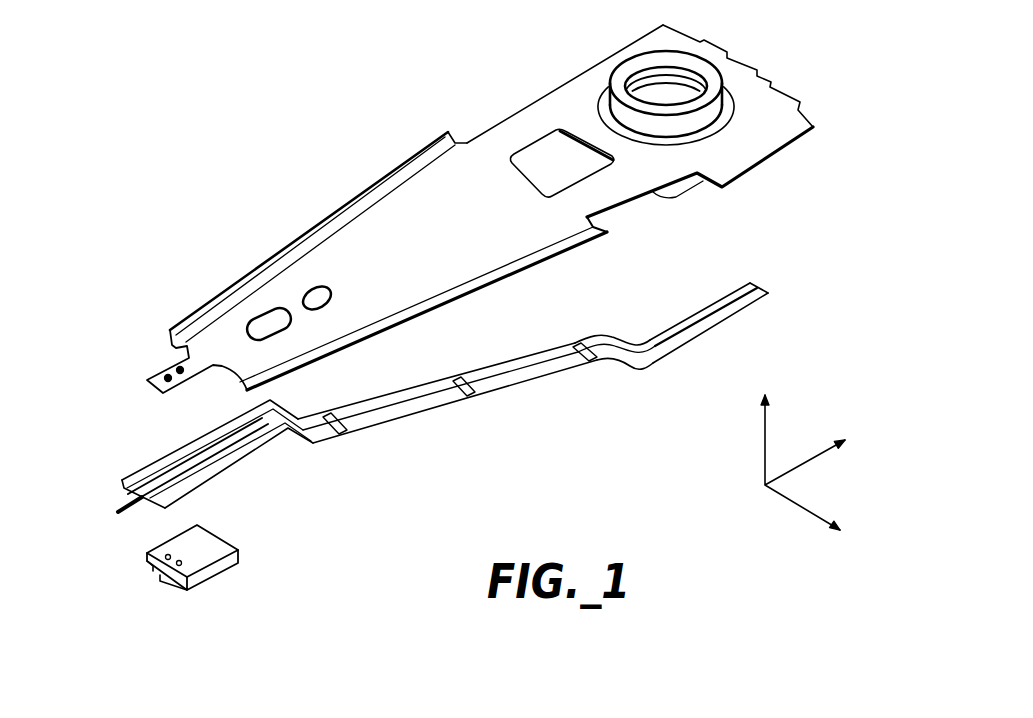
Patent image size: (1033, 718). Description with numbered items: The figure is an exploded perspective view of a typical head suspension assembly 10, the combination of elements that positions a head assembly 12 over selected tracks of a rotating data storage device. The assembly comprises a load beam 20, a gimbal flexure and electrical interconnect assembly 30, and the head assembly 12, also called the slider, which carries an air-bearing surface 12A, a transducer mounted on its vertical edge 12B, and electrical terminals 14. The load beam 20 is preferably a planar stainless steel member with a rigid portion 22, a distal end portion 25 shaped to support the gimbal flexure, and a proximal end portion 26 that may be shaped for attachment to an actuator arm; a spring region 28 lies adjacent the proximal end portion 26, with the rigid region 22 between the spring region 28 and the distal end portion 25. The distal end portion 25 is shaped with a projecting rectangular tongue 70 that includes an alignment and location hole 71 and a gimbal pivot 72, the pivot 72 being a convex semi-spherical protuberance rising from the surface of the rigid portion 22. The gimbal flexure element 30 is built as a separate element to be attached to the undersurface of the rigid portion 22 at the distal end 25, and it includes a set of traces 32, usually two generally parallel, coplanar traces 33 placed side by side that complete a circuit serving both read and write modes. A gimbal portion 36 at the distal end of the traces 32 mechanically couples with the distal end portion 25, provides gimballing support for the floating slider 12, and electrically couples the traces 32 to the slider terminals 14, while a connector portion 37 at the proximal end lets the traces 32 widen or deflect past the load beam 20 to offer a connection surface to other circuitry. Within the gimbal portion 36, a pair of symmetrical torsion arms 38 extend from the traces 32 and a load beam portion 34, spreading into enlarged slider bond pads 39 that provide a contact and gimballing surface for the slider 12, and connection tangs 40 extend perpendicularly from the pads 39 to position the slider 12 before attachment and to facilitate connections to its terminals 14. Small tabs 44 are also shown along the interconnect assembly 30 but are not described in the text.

The head suspension assembly 10 is at (330, 118).
The head assembly 12 is at (220, 580).
The air-bearing surface 12A is at (182, 583).
The vertical edge 12B is at (150, 565).
The electrical terminals 14 is at (170, 557).
The load beam 20 is at (455, 130).
The rigid portion 22 is at (360, 250).
The distal end portion 25 is at (128, 380).
The proximal end portion 26 is at (752, 58).
The spring region 28 is at (555, 103).
The gimbal flexure and electrical interconnect assembly 30 is at (403, 428).
The set of traces 32 is at (653, 350).
The traces 33 is at (553, 350).
The load beam portion 34 is at (490, 357).
The gimbal portion 36 is at (228, 487).
The connector portion 37 is at (723, 290).
The torsion arms 38 is at (165, 462).
The slider bond pads 39 is at (152, 468).
The connection tangs 40 is at (137, 513).
The attachment tabs 44 is at (328, 418).
The rectangular tongue 70 is at (147, 386).
The alignment and location hole 71 is at (180, 366).
The gimbal pivot 72 is at (168, 374).